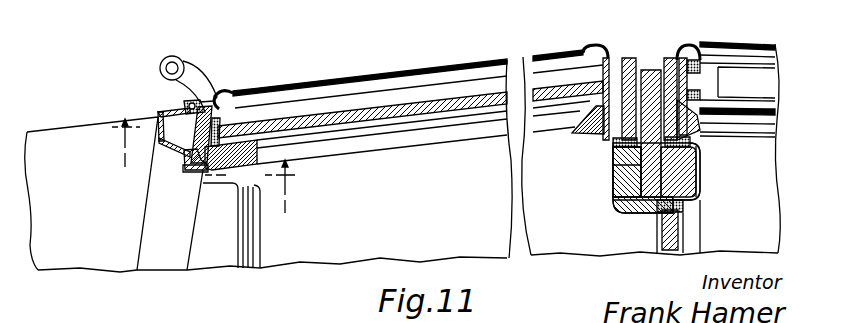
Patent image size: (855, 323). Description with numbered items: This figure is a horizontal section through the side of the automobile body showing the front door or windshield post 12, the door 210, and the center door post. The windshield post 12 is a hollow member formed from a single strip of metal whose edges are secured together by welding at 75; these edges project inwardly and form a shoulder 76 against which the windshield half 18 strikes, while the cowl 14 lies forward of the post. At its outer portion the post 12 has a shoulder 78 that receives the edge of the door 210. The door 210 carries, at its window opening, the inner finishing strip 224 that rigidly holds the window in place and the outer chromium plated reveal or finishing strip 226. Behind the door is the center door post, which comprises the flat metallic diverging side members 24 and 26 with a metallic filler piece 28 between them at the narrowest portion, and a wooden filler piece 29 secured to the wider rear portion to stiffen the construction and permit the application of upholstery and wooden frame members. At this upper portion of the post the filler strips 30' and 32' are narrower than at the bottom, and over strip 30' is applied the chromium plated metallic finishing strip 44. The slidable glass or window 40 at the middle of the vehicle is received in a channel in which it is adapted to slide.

The cowl 14 is at (53, 138).
The front door or windshield post 12 is at (160, 111).
The windshield half 18 is at (215, 166).
The shoulder 78 is at (193, 106).
The shoulder 76 is at (192, 147).
The welded edges 75 is at (195, 167).
The door 210 is at (398, 74).
The chromium plated reveal or finishing strip 226 is at (333, 90).
The finishing strip 224 is at (588, 128).
The metallic filler piece 28 is at (647, 72).
The side member 26 is at (622, 162).
The filler strip 32' is at (627, 172).
The wooden filler piece 29 is at (640, 187).
The slidable glass or window 40 is at (667, 238).
The metallic finishing strip 44 is at (700, 157).
The filler strip 30' is at (700, 172).
The side member 24 is at (697, 193).